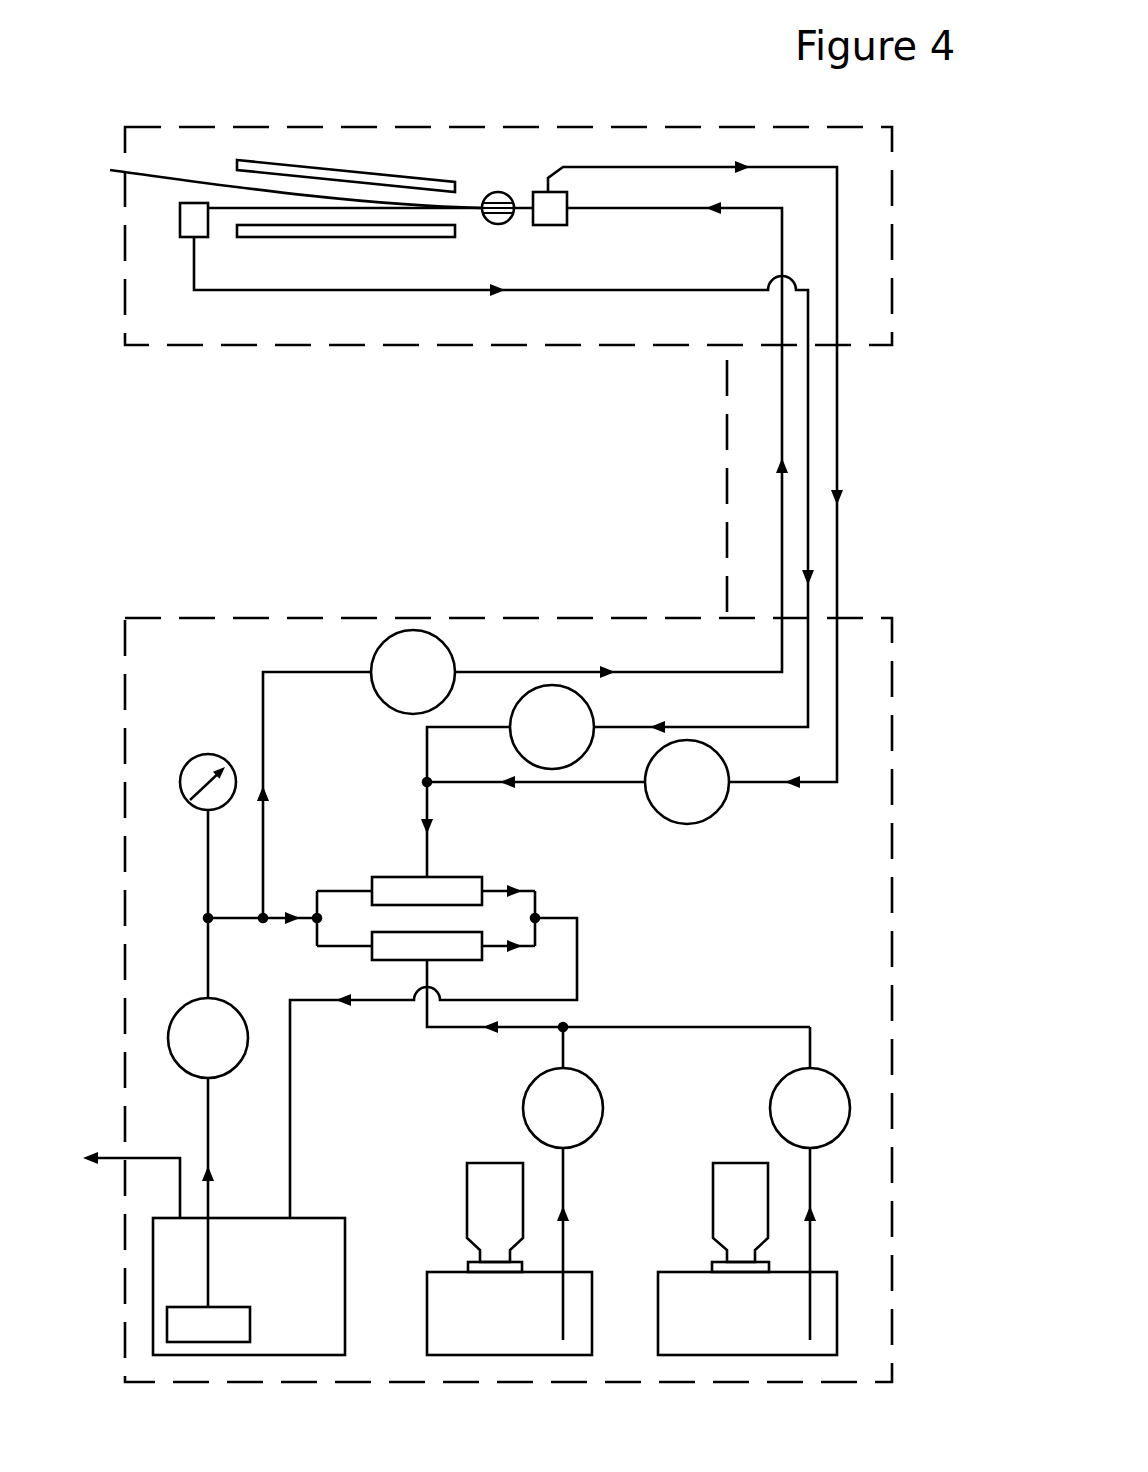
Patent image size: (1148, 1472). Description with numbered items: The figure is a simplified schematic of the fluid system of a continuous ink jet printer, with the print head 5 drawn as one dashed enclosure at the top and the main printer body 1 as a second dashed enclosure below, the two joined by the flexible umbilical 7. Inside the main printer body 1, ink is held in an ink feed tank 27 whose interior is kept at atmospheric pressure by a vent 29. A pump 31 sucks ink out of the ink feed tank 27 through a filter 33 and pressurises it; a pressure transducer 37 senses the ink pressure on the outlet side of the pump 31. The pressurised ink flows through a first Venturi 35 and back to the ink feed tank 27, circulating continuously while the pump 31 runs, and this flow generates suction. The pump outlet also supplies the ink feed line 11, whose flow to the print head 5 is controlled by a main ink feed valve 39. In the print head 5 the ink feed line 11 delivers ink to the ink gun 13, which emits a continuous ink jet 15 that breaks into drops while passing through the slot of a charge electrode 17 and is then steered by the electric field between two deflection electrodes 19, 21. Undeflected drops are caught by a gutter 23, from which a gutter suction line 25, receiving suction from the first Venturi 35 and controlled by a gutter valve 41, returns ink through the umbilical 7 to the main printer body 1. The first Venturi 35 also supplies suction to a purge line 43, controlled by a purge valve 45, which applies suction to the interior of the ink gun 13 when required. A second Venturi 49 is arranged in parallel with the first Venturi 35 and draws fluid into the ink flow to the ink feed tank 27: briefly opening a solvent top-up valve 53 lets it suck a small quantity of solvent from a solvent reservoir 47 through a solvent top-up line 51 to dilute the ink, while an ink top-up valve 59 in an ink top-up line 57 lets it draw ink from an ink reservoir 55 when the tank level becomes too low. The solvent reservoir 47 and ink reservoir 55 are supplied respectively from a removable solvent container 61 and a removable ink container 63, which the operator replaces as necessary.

The main printer body 1 is at (166, 618).
The print head 5 is at (222, 127).
The umbilical 7 is at (727, 500).
The ink feed line 11 is at (360, 665).
The ink gun 13 is at (547, 228).
The ink jet 15 is at (470, 212).
The charge electrode 17 is at (500, 192).
The deflection electrode 19 is at (373, 237).
The deflection electrode 21 is at (318, 160).
The gutter 23 is at (180, 218).
The gutter suction line 25 is at (235, 292).
The ink feed tank 27 is at (318, 1218).
The vent 29 is at (150, 1158).
The pump 31 is at (163, 1040).
The filter 33 is at (167, 1320).
The first Venturi 35 is at (382, 877).
The pressure transducer 37 is at (208, 755).
The main ink feed valve 39 is at (412, 630).
The gutter valve 41 is at (545, 685).
The purge line 43 is at (838, 755).
The purge valve 45 is at (687, 740).
The solvent reservoir 47 is at (837, 1298).
The second Venturi 49 is at (400, 960).
The solvent top-up line 51 is at (810, 1232).
The solvent top-up valve 53 is at (851, 1108).
The ink reservoir 55 is at (592, 1300).
The ink top-up line 57 is at (563, 1192).
The ink top-up valve 59 is at (603, 1108).
The solvent container 61 is at (768, 1177).
The ink container 63 is at (483, 1163).